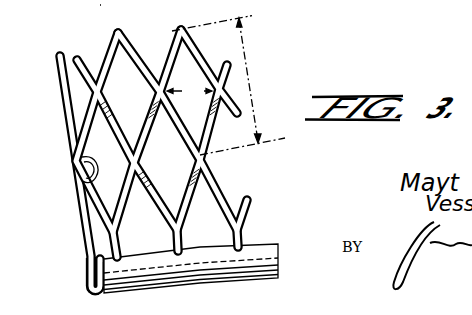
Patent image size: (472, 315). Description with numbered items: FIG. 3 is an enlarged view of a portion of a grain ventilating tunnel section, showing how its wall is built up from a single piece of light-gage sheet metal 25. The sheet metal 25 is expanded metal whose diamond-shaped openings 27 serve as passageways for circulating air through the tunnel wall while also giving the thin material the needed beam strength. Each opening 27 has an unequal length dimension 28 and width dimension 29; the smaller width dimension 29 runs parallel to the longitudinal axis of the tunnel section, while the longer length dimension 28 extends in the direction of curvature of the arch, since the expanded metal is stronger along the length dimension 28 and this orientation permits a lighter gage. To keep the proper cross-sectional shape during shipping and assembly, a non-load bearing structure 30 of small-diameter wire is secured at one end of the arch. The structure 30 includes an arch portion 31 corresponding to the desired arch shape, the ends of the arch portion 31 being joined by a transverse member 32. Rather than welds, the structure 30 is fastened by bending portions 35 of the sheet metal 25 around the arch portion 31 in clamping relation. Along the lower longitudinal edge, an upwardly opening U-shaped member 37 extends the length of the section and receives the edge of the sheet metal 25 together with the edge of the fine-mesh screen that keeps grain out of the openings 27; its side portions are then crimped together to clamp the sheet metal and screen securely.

The sheet metal 25 is at (112, 50).
The openings 27 is at (117, 94).
The length dimension 28 is at (228, 85).
The width dimension 29 is at (189, 89).
The non-load bearing structure 30 is at (259, 9).
The arch portion 31 is at (86, 238).
The transverse member 32 is at (100, 5).
The bending portions 35 is at (97, 167).
The U-shaped member 37 is at (279, 249).